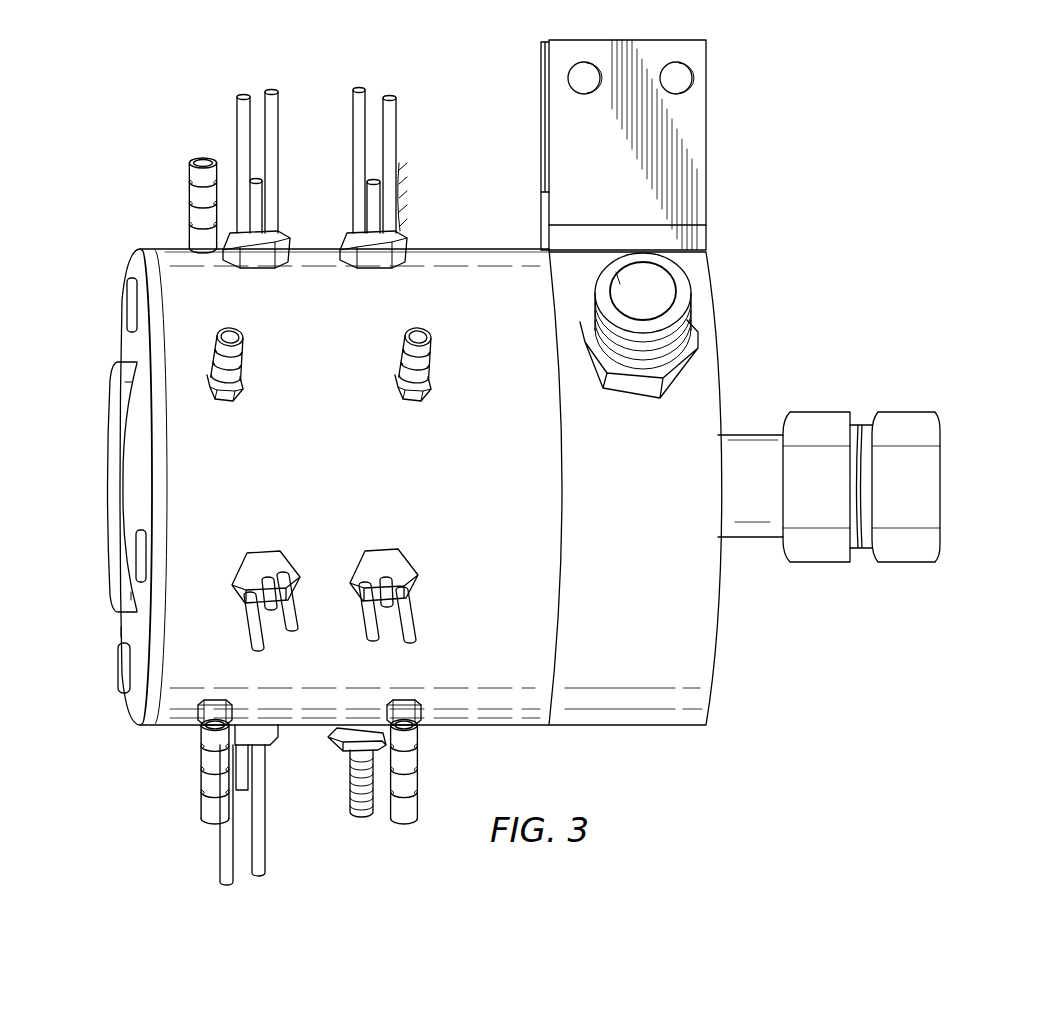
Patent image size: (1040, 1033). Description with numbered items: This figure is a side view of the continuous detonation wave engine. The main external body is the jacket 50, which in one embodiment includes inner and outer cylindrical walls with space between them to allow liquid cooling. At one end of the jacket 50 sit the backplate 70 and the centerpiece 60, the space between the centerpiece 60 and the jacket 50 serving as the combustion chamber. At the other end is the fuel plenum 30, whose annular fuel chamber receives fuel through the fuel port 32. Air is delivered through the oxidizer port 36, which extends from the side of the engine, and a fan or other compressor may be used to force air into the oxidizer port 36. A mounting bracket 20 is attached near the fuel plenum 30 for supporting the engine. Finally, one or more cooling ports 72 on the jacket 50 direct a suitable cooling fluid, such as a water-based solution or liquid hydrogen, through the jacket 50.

The mounting bracket 20 is at (706, 130).
The fuel plenum 30 is at (707, 619).
The fuel port 32 is at (642, 282).
The oxidizer port 36 is at (950, 489).
The jacket 50 is at (493, 248).
The centerpiece 60 is at (115, 452).
The backplate 70 is at (127, 262).
The cooling port 72 is at (190, 199).